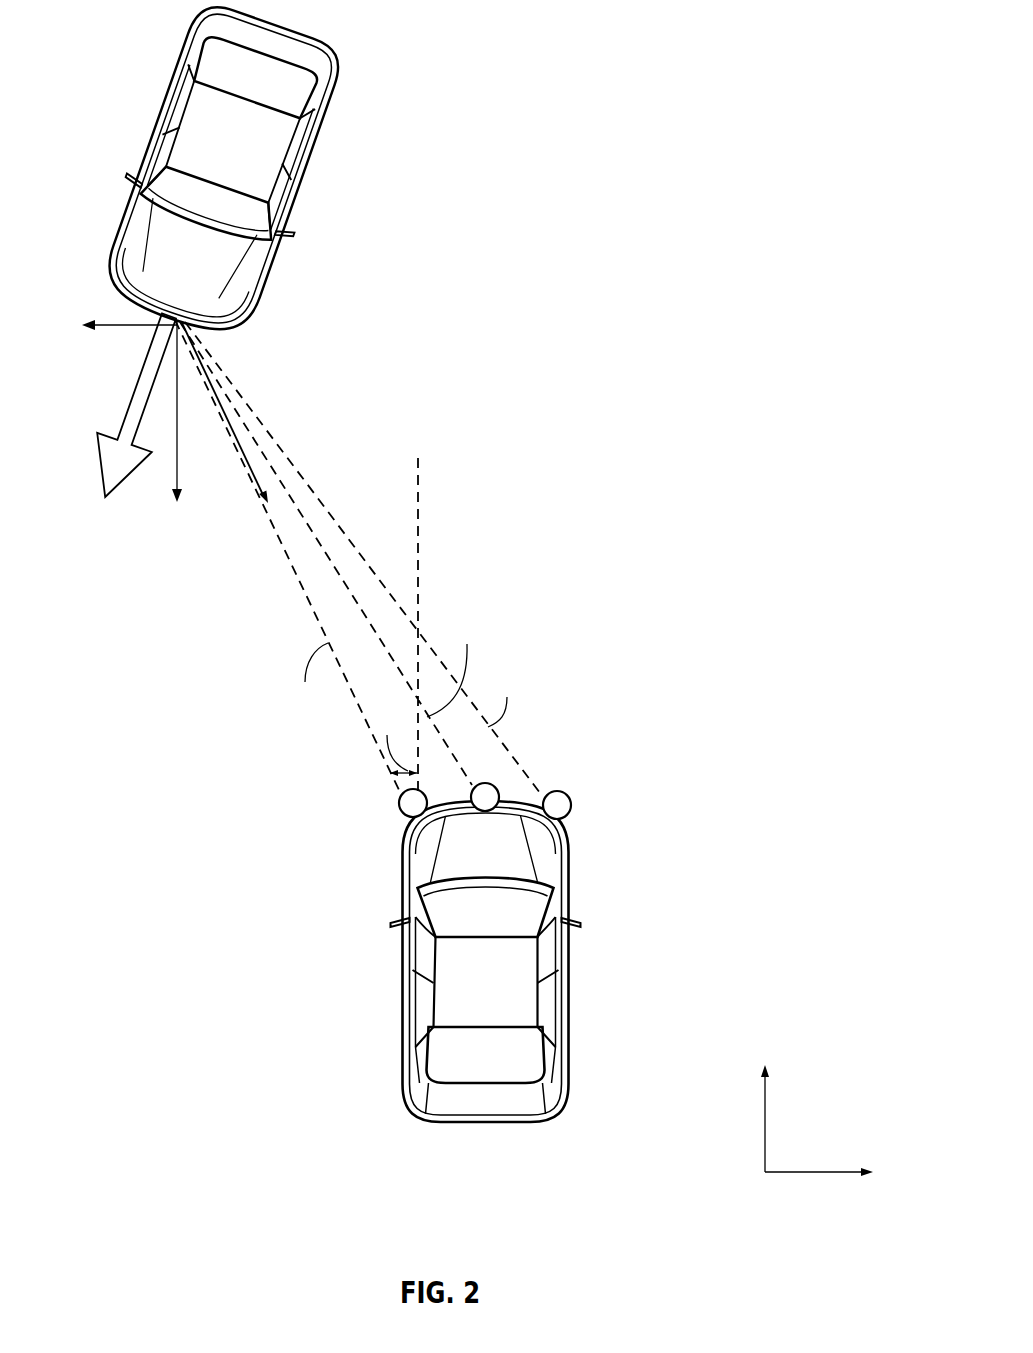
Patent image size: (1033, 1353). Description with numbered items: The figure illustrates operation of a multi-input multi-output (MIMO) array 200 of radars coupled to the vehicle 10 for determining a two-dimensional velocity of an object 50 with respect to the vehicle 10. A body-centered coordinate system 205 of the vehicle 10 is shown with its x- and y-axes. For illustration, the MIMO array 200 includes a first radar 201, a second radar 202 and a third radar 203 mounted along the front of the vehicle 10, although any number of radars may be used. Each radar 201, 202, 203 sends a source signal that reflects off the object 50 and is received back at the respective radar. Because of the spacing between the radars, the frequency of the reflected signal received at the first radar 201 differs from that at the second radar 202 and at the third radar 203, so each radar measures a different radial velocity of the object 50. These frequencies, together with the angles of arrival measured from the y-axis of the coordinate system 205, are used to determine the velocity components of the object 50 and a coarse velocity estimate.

The object 50 is at (324, 150).
The vehicle 10 is at (573, 990).
The multi-input multi-output (MIMO) array 200 is at (823, 695).
The first radar 201 is at (403, 817).
The second radar 202 is at (502, 788).
The third radar 203 is at (571, 805).
The body-centered coordinate system 205 is at (848, 1037).